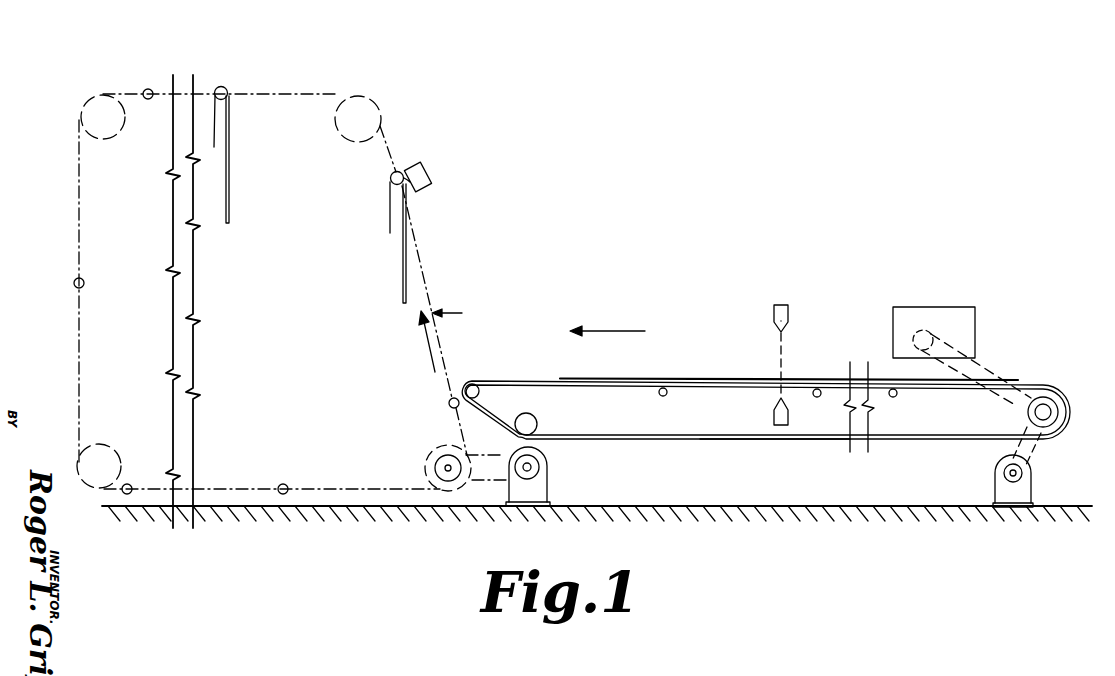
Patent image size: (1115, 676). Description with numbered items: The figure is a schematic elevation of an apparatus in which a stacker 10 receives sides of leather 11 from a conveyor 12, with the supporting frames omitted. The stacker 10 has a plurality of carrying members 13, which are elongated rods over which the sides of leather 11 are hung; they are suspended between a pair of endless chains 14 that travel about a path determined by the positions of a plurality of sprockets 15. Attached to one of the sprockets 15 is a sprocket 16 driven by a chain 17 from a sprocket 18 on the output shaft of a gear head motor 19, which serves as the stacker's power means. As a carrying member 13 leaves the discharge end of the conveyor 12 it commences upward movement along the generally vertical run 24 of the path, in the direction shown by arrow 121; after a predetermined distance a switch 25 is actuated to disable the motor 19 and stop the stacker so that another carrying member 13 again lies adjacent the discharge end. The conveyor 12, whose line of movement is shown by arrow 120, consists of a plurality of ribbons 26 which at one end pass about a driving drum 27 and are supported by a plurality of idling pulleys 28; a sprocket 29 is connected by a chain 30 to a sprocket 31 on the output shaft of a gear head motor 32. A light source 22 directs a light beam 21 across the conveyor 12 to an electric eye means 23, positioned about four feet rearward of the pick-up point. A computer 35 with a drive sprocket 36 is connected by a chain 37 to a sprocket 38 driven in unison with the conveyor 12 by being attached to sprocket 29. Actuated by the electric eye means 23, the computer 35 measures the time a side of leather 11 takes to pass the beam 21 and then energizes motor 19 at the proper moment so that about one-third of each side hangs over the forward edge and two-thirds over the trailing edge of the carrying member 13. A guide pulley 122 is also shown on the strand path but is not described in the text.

The stacker 10 is at (70, 199).
The sides of leather 11 is at (232, 165).
The conveyor 12 is at (505, 371).
The carrying members 13 is at (224, 87).
The endless chains 14 is at (426, 279).
The sprockets 15 is at (97, 100).
The sprocket 16 is at (443, 484).
The chain 17 is at (498, 454).
The sprocket 18 is at (541, 460).
The gear head motor 19 is at (548, 490).
The light beam 21 is at (784, 356).
The light source 22 is at (772, 418).
The electric eye means 23 is at (783, 303).
The vertical run 24 is at (458, 313).
The switch 25 is at (431, 172).
The ribbons 26 is at (790, 442).
The driving drum 27 is at (1020, 417).
The idling pulleys 28 is at (481, 392).
The sprocket 29 is at (1060, 410).
The chain 30 is at (1040, 451).
The sprocket 31 is at (1004, 467).
The gear head motor 32 is at (995, 489).
The computer 35 is at (915, 300).
The drive sprocket 36 is at (931, 332).
The chain 37 is at (998, 376).
The sprocket 38 is at (1046, 404).
The arrow 120 is at (622, 327).
The arrow 121 is at (428, 349).
The guide pulley 122 is at (402, 172).